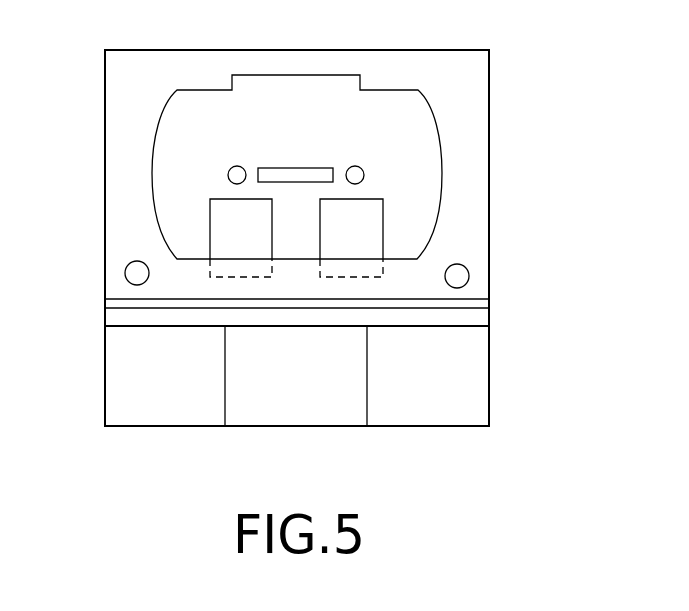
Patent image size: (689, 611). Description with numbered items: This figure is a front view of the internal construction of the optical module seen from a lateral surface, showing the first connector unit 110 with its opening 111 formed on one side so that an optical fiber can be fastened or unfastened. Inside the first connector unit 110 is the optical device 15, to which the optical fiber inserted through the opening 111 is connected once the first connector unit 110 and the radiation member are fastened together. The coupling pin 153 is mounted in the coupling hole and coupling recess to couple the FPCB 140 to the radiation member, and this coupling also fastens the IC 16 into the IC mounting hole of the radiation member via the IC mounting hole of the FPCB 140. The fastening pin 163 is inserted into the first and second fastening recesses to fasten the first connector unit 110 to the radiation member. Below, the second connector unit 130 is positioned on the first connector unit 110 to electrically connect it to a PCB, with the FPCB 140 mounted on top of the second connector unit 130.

The first connector unit 110 is at (462, 82).
The opening 111 is at (440, 122).
The optical device 15 is at (297, 168).
The coupling pin 153 is at (364, 175).
The IC 16 is at (383, 230).
The fastening pin 163 is at (457, 276).
The FPCB 140 is at (482, 317).
The second connector unit 130 is at (457, 380).